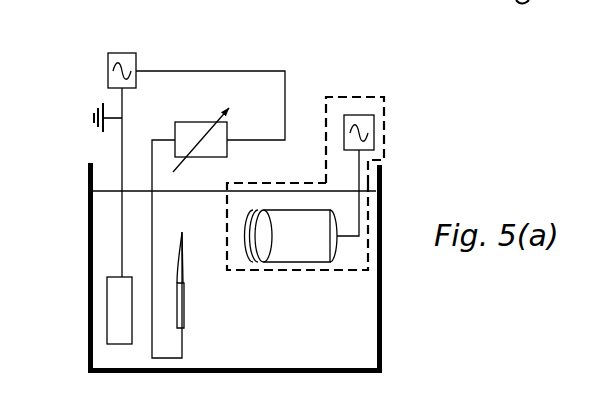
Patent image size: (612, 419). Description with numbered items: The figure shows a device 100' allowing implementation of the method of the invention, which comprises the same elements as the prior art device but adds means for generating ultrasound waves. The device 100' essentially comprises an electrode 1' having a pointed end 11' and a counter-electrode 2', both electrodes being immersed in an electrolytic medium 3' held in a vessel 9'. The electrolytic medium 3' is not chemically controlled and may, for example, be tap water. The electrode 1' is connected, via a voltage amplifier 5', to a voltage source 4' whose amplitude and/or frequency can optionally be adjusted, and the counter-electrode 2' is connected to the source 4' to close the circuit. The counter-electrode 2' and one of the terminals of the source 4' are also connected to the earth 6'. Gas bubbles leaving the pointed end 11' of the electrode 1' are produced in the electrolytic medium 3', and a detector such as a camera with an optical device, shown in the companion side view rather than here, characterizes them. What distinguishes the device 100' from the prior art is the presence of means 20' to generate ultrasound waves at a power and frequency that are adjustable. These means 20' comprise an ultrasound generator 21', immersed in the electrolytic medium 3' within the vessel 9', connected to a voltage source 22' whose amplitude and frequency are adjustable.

The electrode 1' is at (214, 345).
The counter-electrode 2' is at (83, 312).
The electrolytic medium 3' is at (234, 299).
The voltage source 4' is at (140, 45).
The voltage amplifier 5' is at (205, 144).
The earth 6' is at (76, 106).
The vessel 9' is at (269, 267).
The end 11' is at (110, 247).
The means to generate ultrasound waves 20' is at (361, 112).
The ultrasound generator 21' is at (297, 212).
The voltage source 22' is at (402, 142).
The device 100' is at (315, 214).